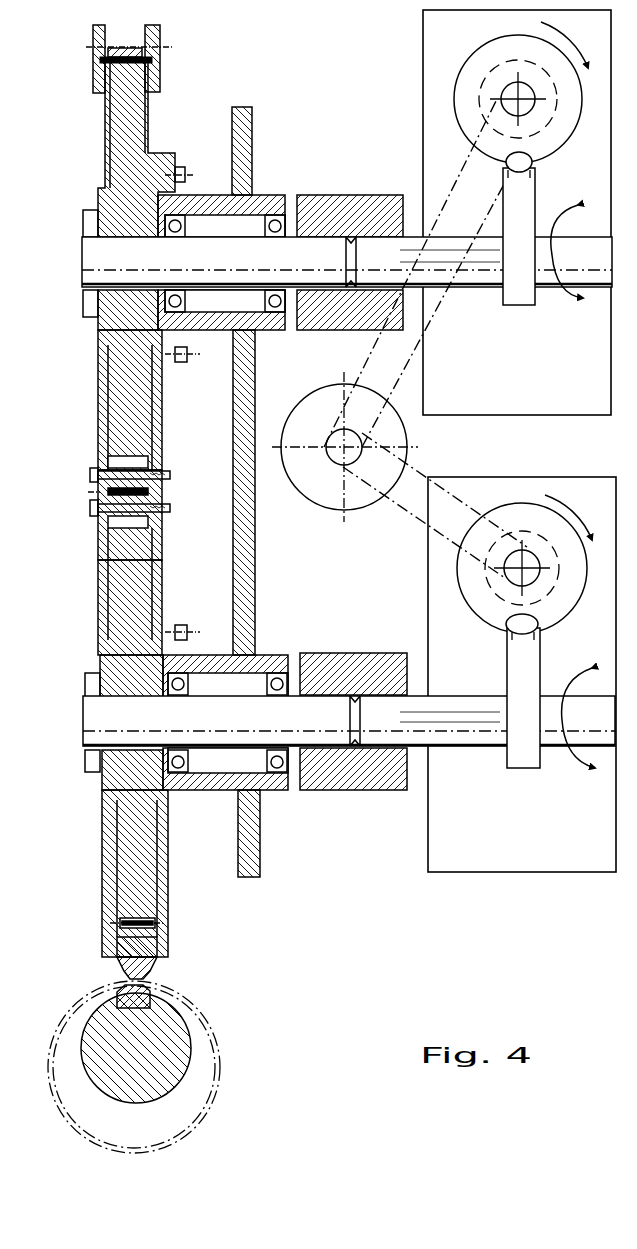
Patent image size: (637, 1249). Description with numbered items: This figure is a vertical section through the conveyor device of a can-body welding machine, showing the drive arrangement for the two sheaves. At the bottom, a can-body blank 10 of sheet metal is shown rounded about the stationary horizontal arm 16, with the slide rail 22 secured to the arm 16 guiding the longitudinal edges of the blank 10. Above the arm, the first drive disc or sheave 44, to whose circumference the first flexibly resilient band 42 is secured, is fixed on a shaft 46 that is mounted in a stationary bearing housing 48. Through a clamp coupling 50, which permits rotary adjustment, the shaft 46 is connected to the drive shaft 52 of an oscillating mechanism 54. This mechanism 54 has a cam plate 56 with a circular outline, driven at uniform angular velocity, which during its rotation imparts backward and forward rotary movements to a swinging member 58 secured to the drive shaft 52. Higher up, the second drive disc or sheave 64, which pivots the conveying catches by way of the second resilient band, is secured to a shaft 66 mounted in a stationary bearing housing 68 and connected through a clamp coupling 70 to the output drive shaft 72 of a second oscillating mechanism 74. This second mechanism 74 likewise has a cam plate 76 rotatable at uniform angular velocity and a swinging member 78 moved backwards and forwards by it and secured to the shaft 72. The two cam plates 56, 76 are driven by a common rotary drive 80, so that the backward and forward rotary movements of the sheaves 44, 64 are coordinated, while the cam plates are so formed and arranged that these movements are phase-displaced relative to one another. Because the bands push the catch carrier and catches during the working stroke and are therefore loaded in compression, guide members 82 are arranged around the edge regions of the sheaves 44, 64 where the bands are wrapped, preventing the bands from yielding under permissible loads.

The can-body blank 10 is at (200, 1123).
The stationary horizontal arm 16 is at (173, 1048).
The slide rail 22 is at (147, 971).
The first flexibly resilient band 42 is at (120, 532).
The first drive disc or sheave 44 is at (110, 605).
The shaft 46 is at (104, 715).
The stationary bearing housing 48 is at (265, 782).
The clamp coupling 50 is at (365, 778).
The drive shaft 52 is at (468, 735).
The oscillating mechanism 54 is at (495, 699).
The cam plate 56 is at (512, 515).
The swinging member 58 is at (518, 662).
The second drive disc or sheave 64 is at (125, 365).
The shaft 66 is at (90, 252).
The stationary bearing housing 68 is at (268, 200).
The clamp coupling 70 is at (358, 200).
The output drive shaft 72 is at (473, 272).
The second oscillating mechanism 74 is at (467, 159).
The cam plate 76 is at (490, 53).
The swinging member 78 is at (527, 190).
The common rotary drive 80 is at (313, 487).
The guide members 82 is at (125, 38).